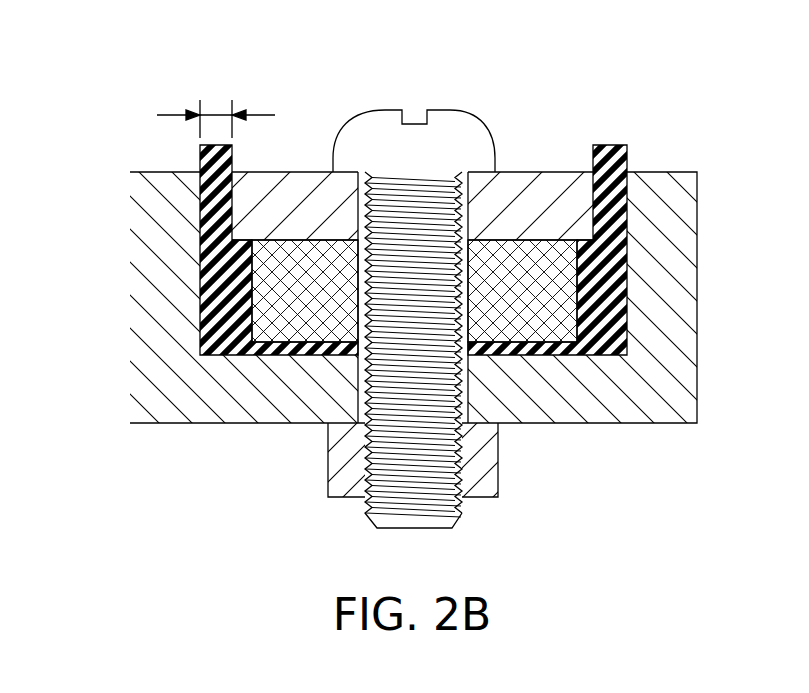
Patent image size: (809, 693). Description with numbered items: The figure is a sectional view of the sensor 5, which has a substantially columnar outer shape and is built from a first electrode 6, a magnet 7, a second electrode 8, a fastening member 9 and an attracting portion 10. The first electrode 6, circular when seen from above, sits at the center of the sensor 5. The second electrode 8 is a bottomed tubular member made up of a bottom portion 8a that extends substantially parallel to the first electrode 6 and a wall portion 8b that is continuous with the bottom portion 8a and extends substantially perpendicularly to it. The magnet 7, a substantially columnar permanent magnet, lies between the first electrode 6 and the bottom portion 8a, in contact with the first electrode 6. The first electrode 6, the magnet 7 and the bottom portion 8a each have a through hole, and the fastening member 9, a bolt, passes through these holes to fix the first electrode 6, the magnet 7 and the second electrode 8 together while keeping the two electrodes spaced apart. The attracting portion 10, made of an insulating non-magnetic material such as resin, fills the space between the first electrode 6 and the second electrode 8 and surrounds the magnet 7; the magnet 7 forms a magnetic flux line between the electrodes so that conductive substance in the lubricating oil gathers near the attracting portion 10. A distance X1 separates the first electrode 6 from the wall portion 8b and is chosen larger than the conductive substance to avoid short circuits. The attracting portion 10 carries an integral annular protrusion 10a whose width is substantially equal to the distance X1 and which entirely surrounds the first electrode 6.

The sensor 5 is at (128, 244).
The first electrode 6 is at (531, 172).
The magnet 7 is at (300, 320).
The second electrode 8 is at (460, 347).
The bottom portion 8a is at (580, 402).
The wall portion 8b is at (672, 228).
The fastening member 9 is at (442, 145).
The attracting portion 10 is at (492, 233).
The protrusion 10a is at (628, 157).
The distance X1 is at (213, 110).